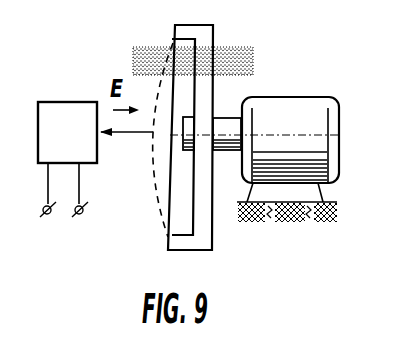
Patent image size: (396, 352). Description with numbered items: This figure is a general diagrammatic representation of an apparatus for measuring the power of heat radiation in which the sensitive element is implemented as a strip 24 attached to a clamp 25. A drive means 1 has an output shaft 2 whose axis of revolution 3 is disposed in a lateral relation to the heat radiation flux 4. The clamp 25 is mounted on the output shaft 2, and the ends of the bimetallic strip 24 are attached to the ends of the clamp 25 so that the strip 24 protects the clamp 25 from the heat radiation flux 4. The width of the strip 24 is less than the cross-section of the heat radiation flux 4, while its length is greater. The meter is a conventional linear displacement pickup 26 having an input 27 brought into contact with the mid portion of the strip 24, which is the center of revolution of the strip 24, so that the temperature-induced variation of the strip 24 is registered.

The motor 1 is at (292, 108).
The output shaft 2 is at (187, 120).
The axis of revolution 3 is at (223, 122).
The heat radiation flux 4 is at (227, 53).
The strip 24 is at (167, 190).
The clamp 25 is at (200, 240).
The linear displacement pickup 26 is at (67, 159).
The input 27 is at (142, 134).